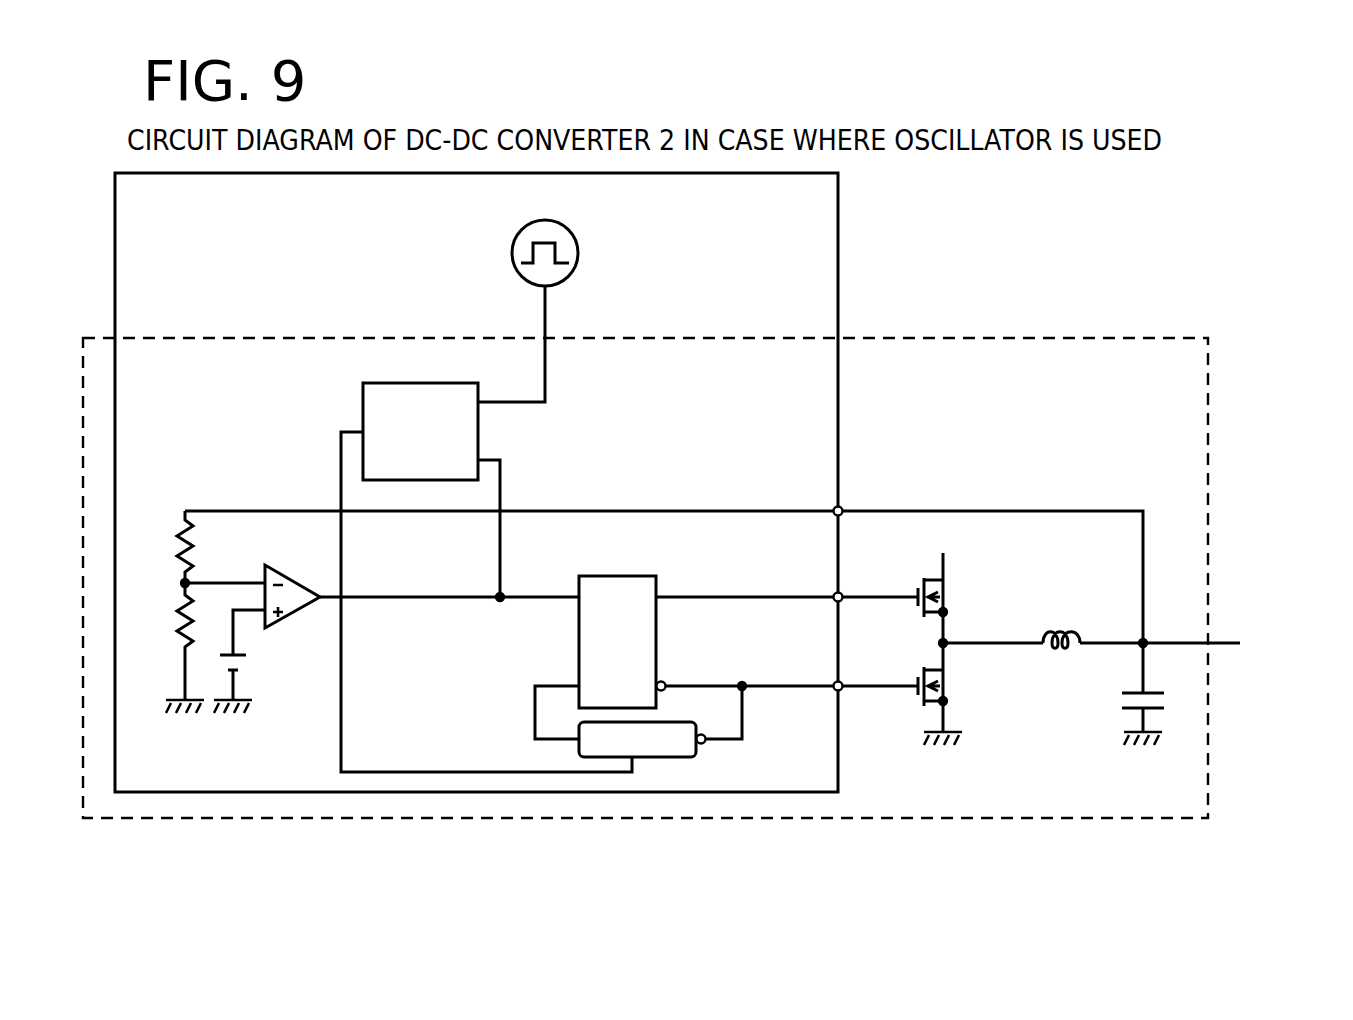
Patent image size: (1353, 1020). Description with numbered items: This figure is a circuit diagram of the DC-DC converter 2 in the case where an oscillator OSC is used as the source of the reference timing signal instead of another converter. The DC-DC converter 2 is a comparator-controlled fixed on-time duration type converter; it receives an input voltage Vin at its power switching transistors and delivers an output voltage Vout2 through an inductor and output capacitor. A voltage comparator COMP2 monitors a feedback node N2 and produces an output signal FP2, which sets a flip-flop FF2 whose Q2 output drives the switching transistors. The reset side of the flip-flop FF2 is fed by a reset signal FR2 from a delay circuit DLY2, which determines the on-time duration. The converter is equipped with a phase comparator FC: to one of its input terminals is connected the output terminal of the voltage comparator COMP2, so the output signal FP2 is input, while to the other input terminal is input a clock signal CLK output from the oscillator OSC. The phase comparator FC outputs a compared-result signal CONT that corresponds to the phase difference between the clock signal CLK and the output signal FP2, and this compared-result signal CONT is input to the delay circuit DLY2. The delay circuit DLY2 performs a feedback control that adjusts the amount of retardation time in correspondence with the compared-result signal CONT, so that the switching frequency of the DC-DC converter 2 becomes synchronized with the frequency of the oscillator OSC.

The DC-DC converter 2 is at (1208, 513).
The oscillator OSC is at (578, 243).
The clock signal CLK is at (538, 344).
The phase comparator FC is at (362, 391).
The compared-result signal CONT is at (486, 602).
The node N2 is at (175, 612).
The voltage comparator COMP2 is at (255, 621).
The output signal FP2 is at (449, 581).
The flip-flop FF2 is at (637, 576).
The flip-flop output Q2 is at (747, 581).
The delay circuit DLY2 is at (675, 757).
The reset signal FR2 is at (533, 712).
The input voltage Vin is at (946, 582).
The output voltage Vout2 is at (1131, 644).